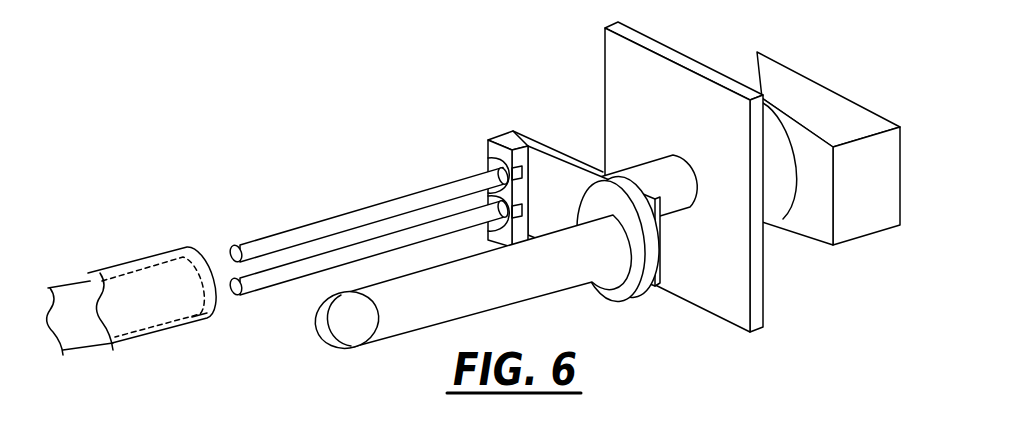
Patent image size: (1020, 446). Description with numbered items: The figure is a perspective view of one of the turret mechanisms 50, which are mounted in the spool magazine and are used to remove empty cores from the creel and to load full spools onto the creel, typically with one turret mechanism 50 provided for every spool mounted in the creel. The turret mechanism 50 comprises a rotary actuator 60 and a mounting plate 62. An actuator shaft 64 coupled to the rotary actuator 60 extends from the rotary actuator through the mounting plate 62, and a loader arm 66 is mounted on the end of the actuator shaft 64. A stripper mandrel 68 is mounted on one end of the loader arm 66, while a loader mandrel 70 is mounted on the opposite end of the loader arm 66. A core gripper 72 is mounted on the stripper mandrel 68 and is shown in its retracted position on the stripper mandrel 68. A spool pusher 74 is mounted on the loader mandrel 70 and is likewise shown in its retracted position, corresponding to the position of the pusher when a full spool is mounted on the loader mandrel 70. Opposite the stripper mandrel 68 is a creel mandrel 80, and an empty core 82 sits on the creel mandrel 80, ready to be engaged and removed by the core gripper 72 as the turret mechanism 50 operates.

The turret mechanism 50 is at (473, 183).
The rotary actuator 60 is at (773, 210).
The mounting plate 62 is at (654, 76).
The actuator shaft 64 is at (658, 172).
The loader arm 66 is at (562, 187).
The stripper mandrel 68 is at (340, 222).
The loader mandrel 70 is at (552, 277).
The core gripper 72 is at (488, 148).
The spool pusher 74 is at (623, 296).
The creel mandrel 80 is at (72, 293).
The empty core 82 is at (137, 262).